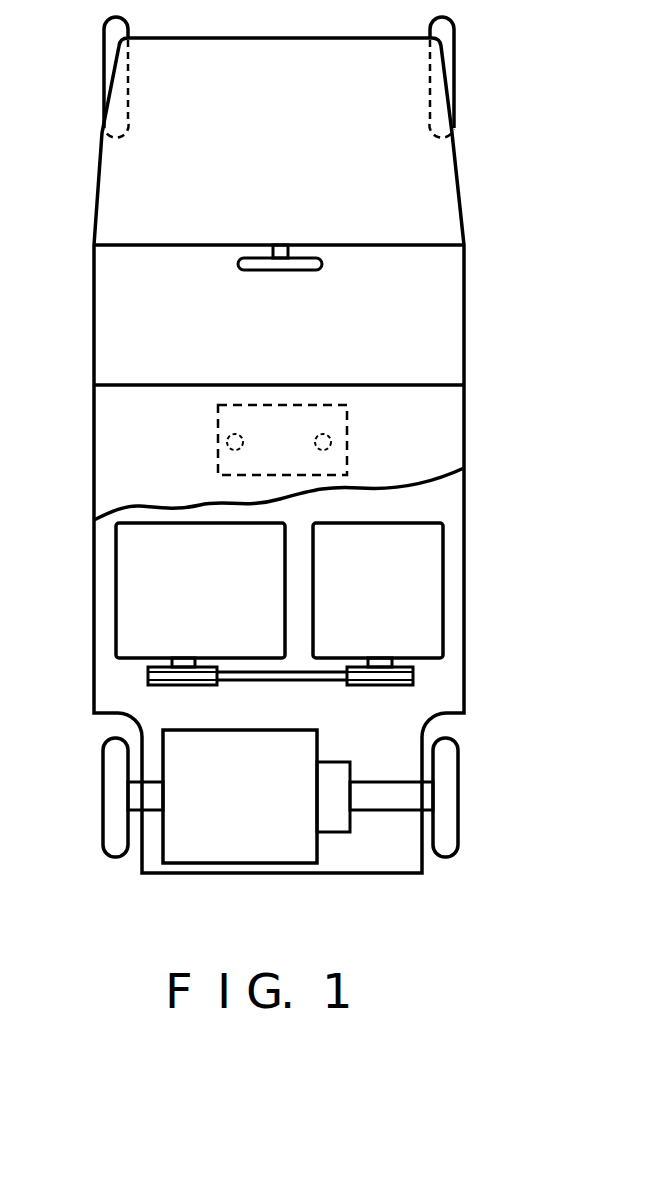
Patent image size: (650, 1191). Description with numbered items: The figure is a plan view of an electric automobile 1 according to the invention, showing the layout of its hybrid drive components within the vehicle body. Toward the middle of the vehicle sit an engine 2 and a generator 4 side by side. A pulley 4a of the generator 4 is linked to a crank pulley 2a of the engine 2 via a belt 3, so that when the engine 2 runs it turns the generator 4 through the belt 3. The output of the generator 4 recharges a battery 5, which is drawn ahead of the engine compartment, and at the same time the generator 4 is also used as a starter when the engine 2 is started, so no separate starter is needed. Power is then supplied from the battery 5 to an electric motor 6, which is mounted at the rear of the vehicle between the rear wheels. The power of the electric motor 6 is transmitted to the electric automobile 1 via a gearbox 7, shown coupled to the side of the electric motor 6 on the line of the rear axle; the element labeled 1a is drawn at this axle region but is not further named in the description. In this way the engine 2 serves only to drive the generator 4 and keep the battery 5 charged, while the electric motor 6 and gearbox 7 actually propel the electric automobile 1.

The electric automobile 1 is at (516, 217).
The drive axle 1a is at (390, 810).
The engine 2 is at (433, 583).
The crank pulley 2a is at (398, 688).
The belt 3 is at (268, 685).
The generator 4 is at (118, 572).
The pulley 4a is at (152, 687).
The battery 5 is at (349, 424).
The electric motor 6 is at (213, 863).
The gearbox 7 is at (333, 832).